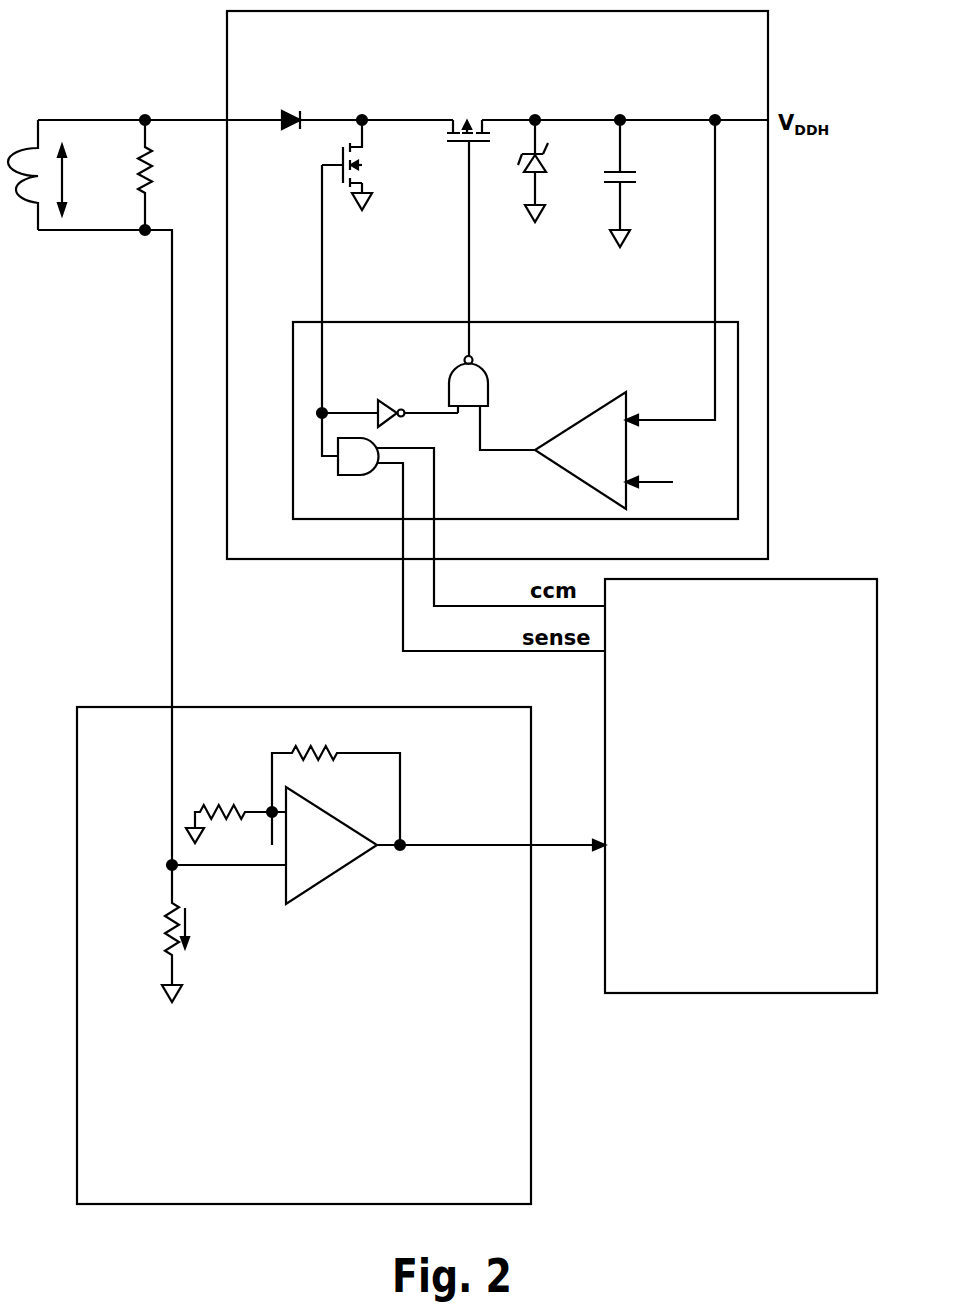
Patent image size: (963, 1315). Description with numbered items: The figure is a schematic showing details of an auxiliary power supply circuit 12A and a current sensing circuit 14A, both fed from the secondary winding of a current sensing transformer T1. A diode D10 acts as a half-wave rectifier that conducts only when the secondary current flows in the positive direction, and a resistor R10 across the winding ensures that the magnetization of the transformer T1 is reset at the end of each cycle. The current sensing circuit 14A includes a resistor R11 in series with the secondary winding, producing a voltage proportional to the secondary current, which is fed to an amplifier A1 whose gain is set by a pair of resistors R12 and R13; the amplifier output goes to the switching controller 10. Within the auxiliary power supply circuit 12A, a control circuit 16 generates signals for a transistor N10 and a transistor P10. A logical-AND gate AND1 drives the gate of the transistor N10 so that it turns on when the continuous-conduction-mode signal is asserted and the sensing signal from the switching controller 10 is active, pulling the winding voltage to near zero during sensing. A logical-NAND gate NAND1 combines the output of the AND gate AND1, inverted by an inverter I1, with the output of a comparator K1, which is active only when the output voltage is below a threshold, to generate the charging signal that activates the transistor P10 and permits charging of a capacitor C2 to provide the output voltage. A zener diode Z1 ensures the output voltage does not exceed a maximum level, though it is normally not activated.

The switching controller 10 is at (741, 786).
The auxiliary power supply circuit 12A is at (497, 285).
The current sensing circuit 14A is at (304, 955).
The control circuit 16 is at (515, 420).
The current sensing transformer T1 is at (60, 175).
The resistor R10 is at (175, 175).
The diode D10 is at (289, 103).
The transistor N10 is at (375, 162).
The transistor P10 is at (505, 186).
The zener diode Z1 is at (550, 168).
The capacitor C2 is at (637, 181).
The inverter I1 is at (387, 402).
The logical-NAND gate NAND1 is at (456, 393).
The comparator K1 is at (626, 449).
The logical-AND gate AND1 is at (355, 470).
The amplifier A1 is at (388, 845).
The resistor R11 is at (171, 926).
The resistor R12 is at (236, 811).
The resistor R13 is at (336, 783).